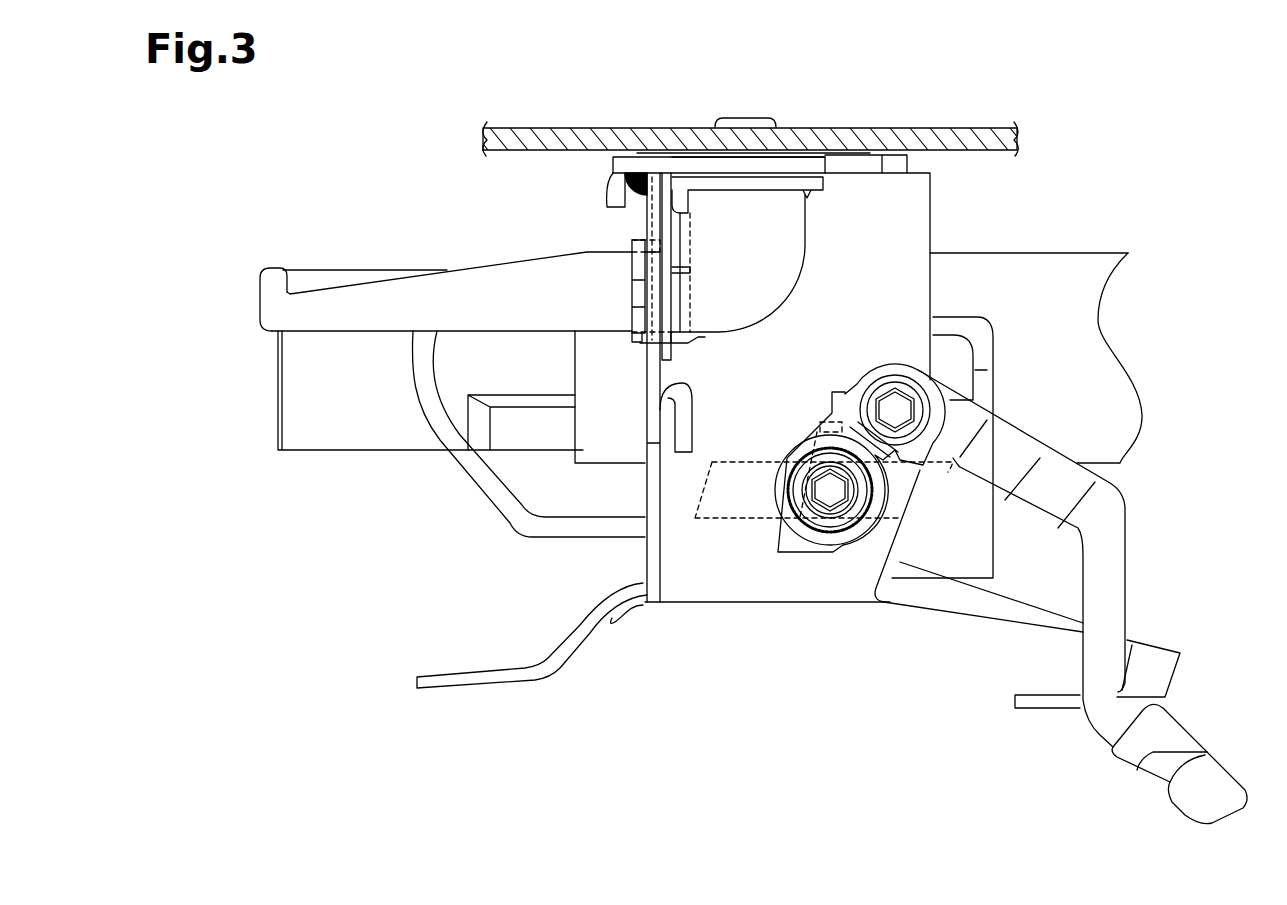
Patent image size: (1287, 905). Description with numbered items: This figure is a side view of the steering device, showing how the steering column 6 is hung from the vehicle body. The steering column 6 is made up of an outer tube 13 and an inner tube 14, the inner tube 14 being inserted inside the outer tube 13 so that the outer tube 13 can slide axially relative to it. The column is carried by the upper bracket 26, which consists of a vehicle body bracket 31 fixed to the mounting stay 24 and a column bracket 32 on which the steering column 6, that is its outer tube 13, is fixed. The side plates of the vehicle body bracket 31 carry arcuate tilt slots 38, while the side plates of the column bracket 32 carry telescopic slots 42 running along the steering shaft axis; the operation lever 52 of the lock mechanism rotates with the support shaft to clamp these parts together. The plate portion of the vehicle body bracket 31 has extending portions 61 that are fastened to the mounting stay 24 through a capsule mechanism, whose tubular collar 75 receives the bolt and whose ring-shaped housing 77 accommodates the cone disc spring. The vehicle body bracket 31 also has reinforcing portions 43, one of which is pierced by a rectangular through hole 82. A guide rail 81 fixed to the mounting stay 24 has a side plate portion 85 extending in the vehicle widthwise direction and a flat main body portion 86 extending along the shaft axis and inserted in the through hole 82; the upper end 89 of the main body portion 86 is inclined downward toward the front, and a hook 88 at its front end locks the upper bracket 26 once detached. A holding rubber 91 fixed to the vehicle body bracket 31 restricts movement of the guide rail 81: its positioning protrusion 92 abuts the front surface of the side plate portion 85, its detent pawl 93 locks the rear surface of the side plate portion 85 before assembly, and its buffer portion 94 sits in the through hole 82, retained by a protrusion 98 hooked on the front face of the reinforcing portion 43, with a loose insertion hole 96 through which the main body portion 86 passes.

The steering column 6 is at (1120, 249).
The outer tube 13 is at (1062, 253).
The inner tube 14 is at (326, 270).
The mounting stay 24 is at (925, 135).
The upper bracket 26 is at (757, 124).
The vehicle body bracket 31 is at (931, 186).
The column bracket 32 is at (994, 560).
The tilt slot 38 is at (833, 428).
The telescopic slot 42 is at (722, 519).
The reinforcing portion 43 is at (646, 426).
The operation lever 52 is at (1130, 532).
The extending portion 61 is at (813, 163).
The collar 75 is at (766, 193).
The housing 77 is at (703, 180).
The guide rail 81 is at (808, 193).
The through hole 82 is at (640, 246).
The side plate portion 85 is at (700, 303).
The main body portion 86 is at (535, 261).
The hook 88 is at (280, 268).
The upper end 89 is at (400, 278).
The holding rubber 91 is at (676, 230).
The positioning protrusion 92 is at (683, 273).
The detent pawl 93 is at (700, 345).
The buffer portion 94 is at (620, 341).
The loose insertion hole 96 is at (631, 262).
The protrusion 98 is at (631, 301).